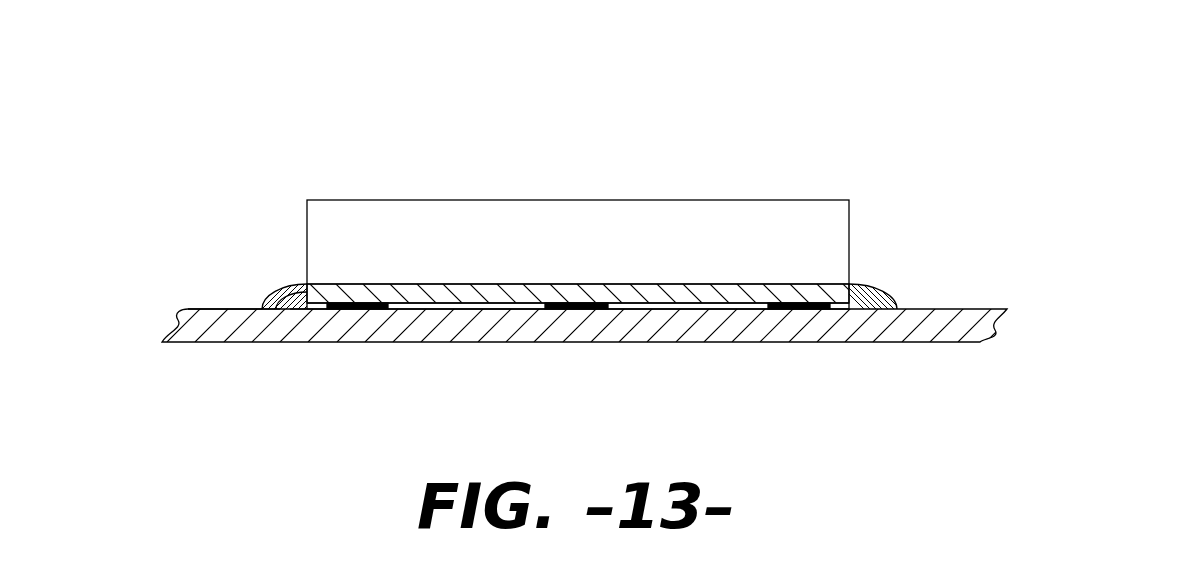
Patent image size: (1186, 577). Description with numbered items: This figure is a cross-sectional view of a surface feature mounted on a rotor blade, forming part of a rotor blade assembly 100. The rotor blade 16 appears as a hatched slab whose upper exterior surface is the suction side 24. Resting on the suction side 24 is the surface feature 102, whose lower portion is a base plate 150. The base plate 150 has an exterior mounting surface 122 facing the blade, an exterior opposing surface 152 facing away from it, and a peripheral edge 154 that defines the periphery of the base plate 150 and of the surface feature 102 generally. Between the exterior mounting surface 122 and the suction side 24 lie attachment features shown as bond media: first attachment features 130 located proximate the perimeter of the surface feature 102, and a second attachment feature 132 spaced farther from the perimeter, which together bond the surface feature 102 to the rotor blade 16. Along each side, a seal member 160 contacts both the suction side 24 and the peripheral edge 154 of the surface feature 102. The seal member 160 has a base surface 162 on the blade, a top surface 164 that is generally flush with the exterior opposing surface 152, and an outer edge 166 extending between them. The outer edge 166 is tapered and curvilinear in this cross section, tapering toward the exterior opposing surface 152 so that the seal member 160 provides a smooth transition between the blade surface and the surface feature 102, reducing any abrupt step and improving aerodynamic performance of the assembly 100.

The rotor blade assembly 100 is at (317, 125).
The surface feature 102 is at (719, 175).
The base plate 150 is at (417, 274).
The exterior opposing surface 152 is at (543, 285).
The seal member 160 is at (872, 276).
The outer edge 166 is at (273, 303).
The top surface 164 is at (306, 283).
The base surface 162 is at (272, 315).
The peripheral edge 154 is at (295, 309).
The first attachment feature 130 is at (338, 310).
The second attachment feature 132 is at (574, 310).
The exterior mounting surface 122 is at (470, 310).
The rotor blade 16 is at (163, 317).
The suction side 24 is at (243, 310).